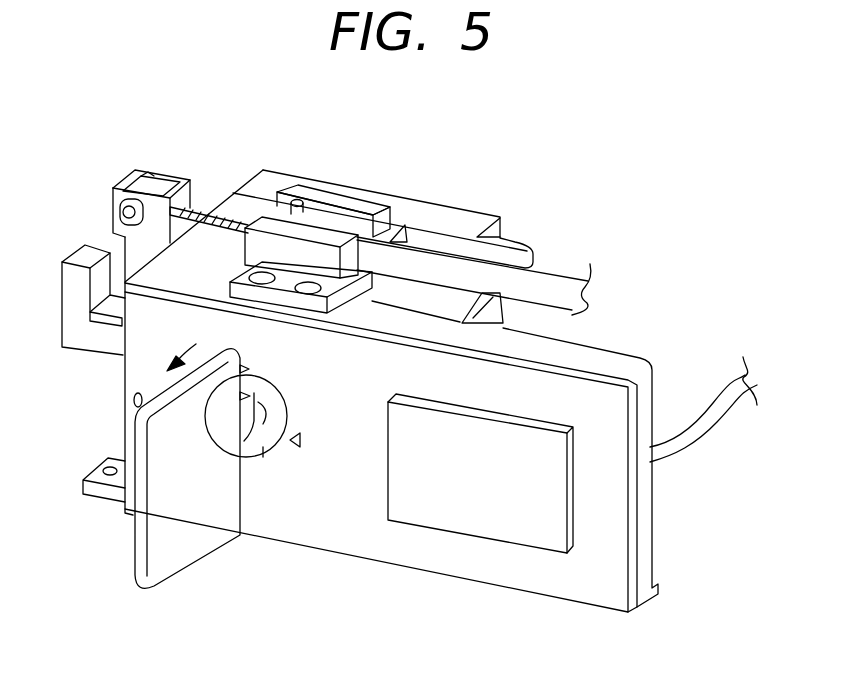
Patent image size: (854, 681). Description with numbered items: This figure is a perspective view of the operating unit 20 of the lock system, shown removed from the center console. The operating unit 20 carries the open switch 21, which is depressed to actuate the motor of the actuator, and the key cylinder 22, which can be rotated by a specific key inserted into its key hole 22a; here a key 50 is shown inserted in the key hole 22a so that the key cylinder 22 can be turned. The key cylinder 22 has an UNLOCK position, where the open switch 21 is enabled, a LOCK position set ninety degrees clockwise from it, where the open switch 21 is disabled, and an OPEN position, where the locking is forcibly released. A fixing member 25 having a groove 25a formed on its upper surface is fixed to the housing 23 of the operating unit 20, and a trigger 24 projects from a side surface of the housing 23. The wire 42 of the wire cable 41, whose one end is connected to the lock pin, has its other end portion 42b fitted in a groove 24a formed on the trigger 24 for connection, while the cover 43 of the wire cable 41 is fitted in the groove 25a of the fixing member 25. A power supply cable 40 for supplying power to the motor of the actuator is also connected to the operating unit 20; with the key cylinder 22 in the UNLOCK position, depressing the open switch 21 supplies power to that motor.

The operating unit 20 is at (274, 127).
The open switch 21 is at (492, 530).
The key cylinder 22 is at (262, 457).
The key hole 22a is at (260, 415).
The housing 23 is at (516, 252).
The trigger 24 is at (112, 198).
The groove 24a is at (152, 176).
The fixing member 25 is at (372, 207).
The groove 25a is at (336, 226).
The power supply cable 40 is at (698, 438).
The wire cable 41 is at (440, 257).
The wire 42 is at (212, 208).
The other end portion 42b is at (108, 220).
The cover 43 is at (560, 270).
The key 50 is at (190, 542).